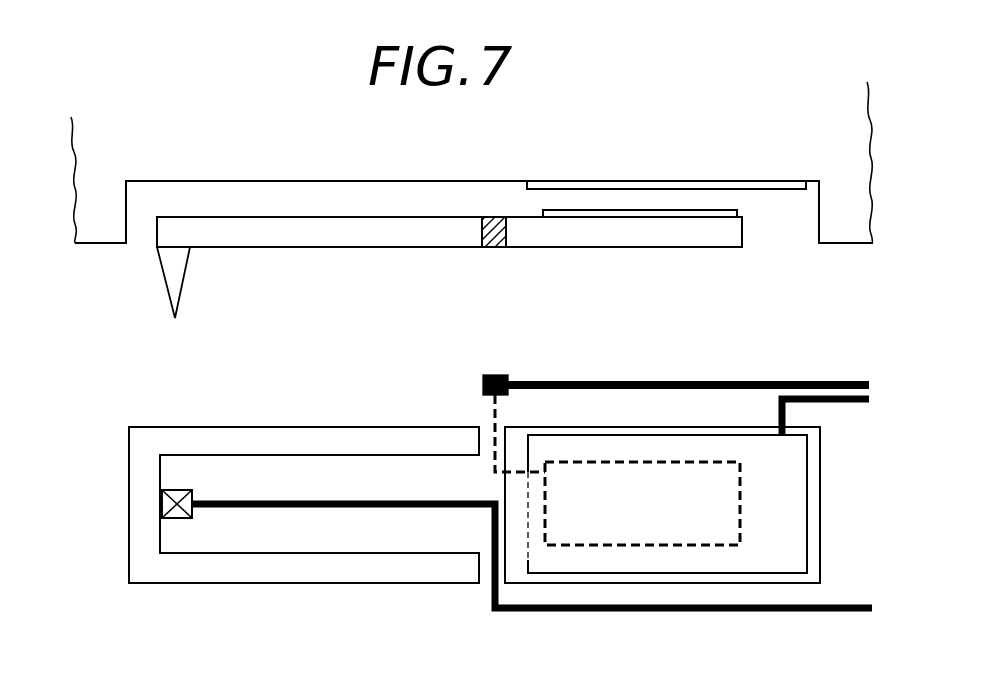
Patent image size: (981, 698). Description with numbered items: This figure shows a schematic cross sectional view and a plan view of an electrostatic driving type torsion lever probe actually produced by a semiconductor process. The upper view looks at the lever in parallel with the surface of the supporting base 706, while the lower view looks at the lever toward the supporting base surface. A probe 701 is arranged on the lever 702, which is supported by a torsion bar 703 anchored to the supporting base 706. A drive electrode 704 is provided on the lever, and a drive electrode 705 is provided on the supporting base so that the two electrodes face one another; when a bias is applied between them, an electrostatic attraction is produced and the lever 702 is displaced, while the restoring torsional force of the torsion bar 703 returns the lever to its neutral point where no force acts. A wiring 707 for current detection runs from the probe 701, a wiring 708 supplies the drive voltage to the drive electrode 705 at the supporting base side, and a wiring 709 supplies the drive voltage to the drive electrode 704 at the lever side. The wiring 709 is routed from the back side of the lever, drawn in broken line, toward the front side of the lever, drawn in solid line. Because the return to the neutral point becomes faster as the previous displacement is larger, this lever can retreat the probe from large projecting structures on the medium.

The probe 701 is at (178, 495).
The lever 702 is at (307, 467).
The torsion bar 703 is at (483, 248).
The drive electrode on the lever 704 is at (673, 213).
The drive electrode on the supporting base 705 is at (553, 182).
The supporting base 706 is at (102, 230).
The wiring for current detection 707 is at (780, 613).
The wiring for drive voltage to the base-side drive electrode 708 is at (790, 382).
The wiring for drive voltage to the lever-side drive electrode 709 is at (827, 397).